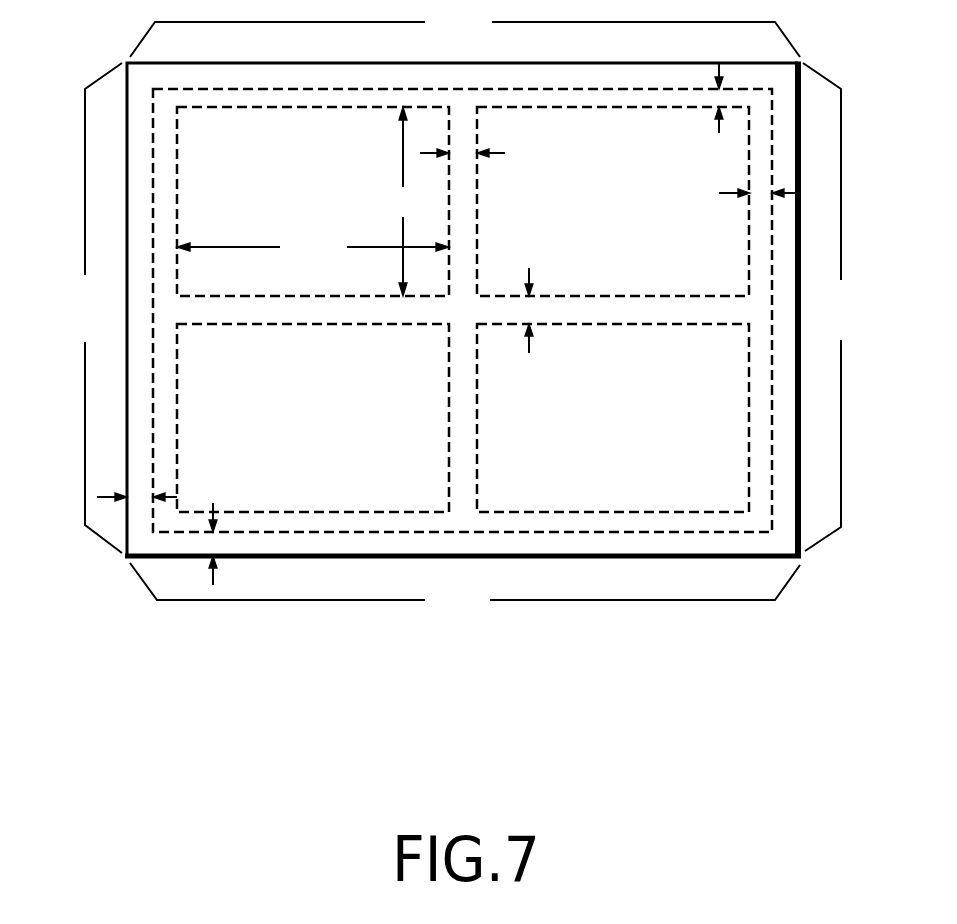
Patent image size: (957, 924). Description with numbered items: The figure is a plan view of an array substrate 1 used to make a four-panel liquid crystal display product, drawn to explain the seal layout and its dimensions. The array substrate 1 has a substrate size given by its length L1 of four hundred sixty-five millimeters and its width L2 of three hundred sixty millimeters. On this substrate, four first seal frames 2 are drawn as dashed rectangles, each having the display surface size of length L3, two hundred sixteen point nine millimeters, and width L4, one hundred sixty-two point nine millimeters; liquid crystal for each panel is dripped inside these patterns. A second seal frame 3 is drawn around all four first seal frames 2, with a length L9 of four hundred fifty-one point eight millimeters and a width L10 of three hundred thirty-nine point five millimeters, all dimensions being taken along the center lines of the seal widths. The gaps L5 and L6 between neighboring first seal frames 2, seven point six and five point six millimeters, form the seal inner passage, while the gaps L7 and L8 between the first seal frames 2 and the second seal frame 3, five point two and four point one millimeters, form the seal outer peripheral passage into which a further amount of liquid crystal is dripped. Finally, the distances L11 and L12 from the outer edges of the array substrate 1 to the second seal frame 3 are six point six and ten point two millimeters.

The array substrate 1 is at (125, 195).
The first seal frame 2 is at (748, 413).
The second seal frame 3 is at (773, 235).
The substrate size L1 is at (465, 30).
The substrate size L2 is at (96, 308).
The display surface size L3 is at (313, 250).
The display surface size L4 is at (407, 201).
The seal inner passage dimension L5 is at (458, 154).
The seal inner passage dimension L6 is at (529, 308).
The seal outer peripheral passage dimension L7 is at (758, 196).
The seal outer peripheral passage dimension L8 is at (715, 100).
The second seal frame size L9 is at (465, 590).
The second seal frame size L10 is at (839, 307).
The distance between substrate outer edge and second seal frame L11 is at (142, 497).
The distance between substrate outer edge and second seal frame L12 is at (213, 542).